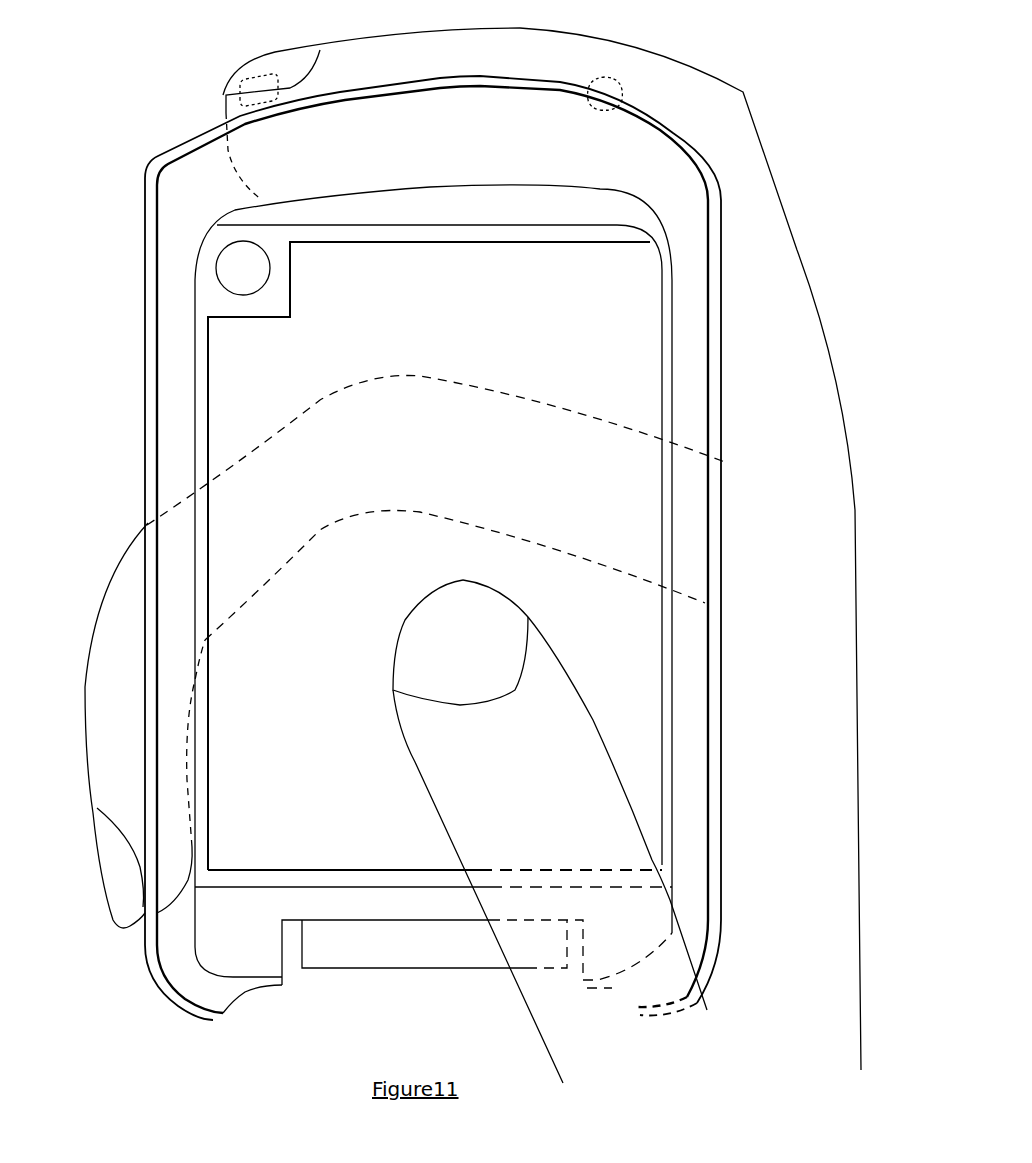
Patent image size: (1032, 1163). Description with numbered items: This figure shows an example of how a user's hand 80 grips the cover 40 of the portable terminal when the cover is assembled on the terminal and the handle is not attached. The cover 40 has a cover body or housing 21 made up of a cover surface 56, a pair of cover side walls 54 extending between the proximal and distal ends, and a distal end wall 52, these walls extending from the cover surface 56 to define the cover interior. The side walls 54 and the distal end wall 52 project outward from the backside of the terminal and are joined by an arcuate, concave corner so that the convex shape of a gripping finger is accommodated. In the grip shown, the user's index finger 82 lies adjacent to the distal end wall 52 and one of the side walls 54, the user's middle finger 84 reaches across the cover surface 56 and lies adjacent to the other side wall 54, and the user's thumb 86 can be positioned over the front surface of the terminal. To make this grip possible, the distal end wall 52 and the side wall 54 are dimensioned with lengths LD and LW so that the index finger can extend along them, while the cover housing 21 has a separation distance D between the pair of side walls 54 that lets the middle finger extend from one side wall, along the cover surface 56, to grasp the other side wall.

The cover body 21 is at (170, 987).
The cover 40 is at (153, 138).
The distal end wall 52 is at (522, 197).
The side wall portions 54 is at (192, 435).
The cover surface 56 is at (557, 345).
The hand 80 is at (832, 245).
The index finger 82 is at (759, 600).
The middle finger 84 is at (436, 508).
The thumb 86 is at (550, 831).
The length of distal end wall LD is at (643, 175).
The length of side wall LW is at (786, 223).
The separation distance D is at (662, 639).